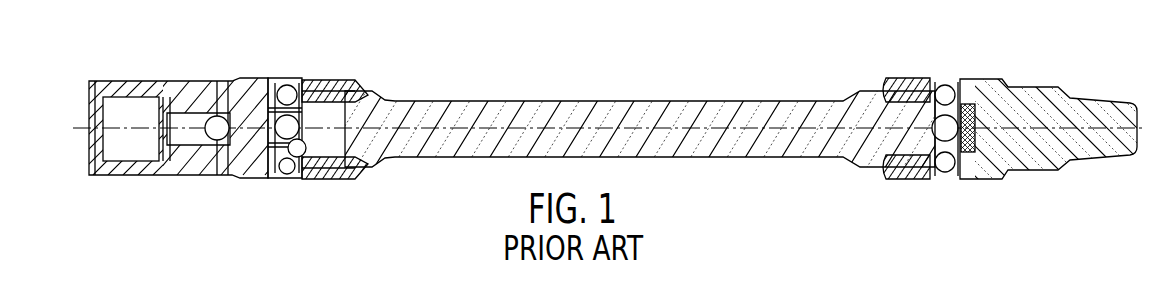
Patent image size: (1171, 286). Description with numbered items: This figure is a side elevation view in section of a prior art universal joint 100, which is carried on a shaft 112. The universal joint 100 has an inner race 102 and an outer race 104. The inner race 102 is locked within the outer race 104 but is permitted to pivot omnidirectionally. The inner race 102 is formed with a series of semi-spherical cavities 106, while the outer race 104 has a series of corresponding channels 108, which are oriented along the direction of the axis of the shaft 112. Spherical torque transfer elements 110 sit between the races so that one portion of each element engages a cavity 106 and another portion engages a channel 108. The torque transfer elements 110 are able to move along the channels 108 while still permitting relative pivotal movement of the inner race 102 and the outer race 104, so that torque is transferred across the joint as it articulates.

The universal joint 100 is at (378, 31).
The inner race 102 is at (356, 94).
The outer race 104 is at (288, 80).
The semi-spherical cavities 106 is at (339, 173).
The channels 108 is at (305, 142).
The torque transfer elements 110 is at (173, 138).
The shaft 112 is at (683, 130).